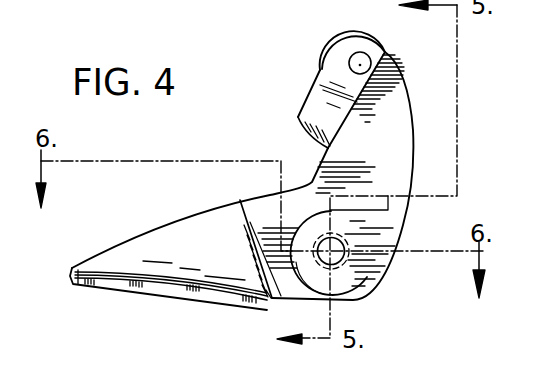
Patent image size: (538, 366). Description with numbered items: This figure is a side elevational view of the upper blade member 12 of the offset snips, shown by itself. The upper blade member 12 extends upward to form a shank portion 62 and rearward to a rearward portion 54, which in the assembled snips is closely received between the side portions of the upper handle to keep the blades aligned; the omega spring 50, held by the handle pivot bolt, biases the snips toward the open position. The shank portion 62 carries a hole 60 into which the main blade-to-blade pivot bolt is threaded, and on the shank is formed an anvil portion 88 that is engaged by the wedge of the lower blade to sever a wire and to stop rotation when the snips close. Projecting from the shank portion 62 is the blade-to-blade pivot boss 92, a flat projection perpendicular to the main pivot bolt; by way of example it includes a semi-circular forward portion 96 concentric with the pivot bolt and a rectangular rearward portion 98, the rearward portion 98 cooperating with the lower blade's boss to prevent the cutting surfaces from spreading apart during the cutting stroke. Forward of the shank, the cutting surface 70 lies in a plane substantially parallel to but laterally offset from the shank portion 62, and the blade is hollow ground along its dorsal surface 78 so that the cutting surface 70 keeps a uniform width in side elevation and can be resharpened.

The upper blade member 12 is at (196, 157).
The omega spring 50 is at (349, 64).
The rearward portion 54 is at (360, 41).
The anvil portion 88 is at (304, 131).
The semi-circular forward portion 96 is at (295, 228).
The rectangular rearward portion 98 is at (388, 192).
The hole 60 is at (341, 261).
The shank portion 62 is at (353, 300).
The blade-to-blade pivot boss 92 is at (374, 240).
The cutting surface 70 is at (160, 296).
The dorsal surface 78 is at (529, 239).